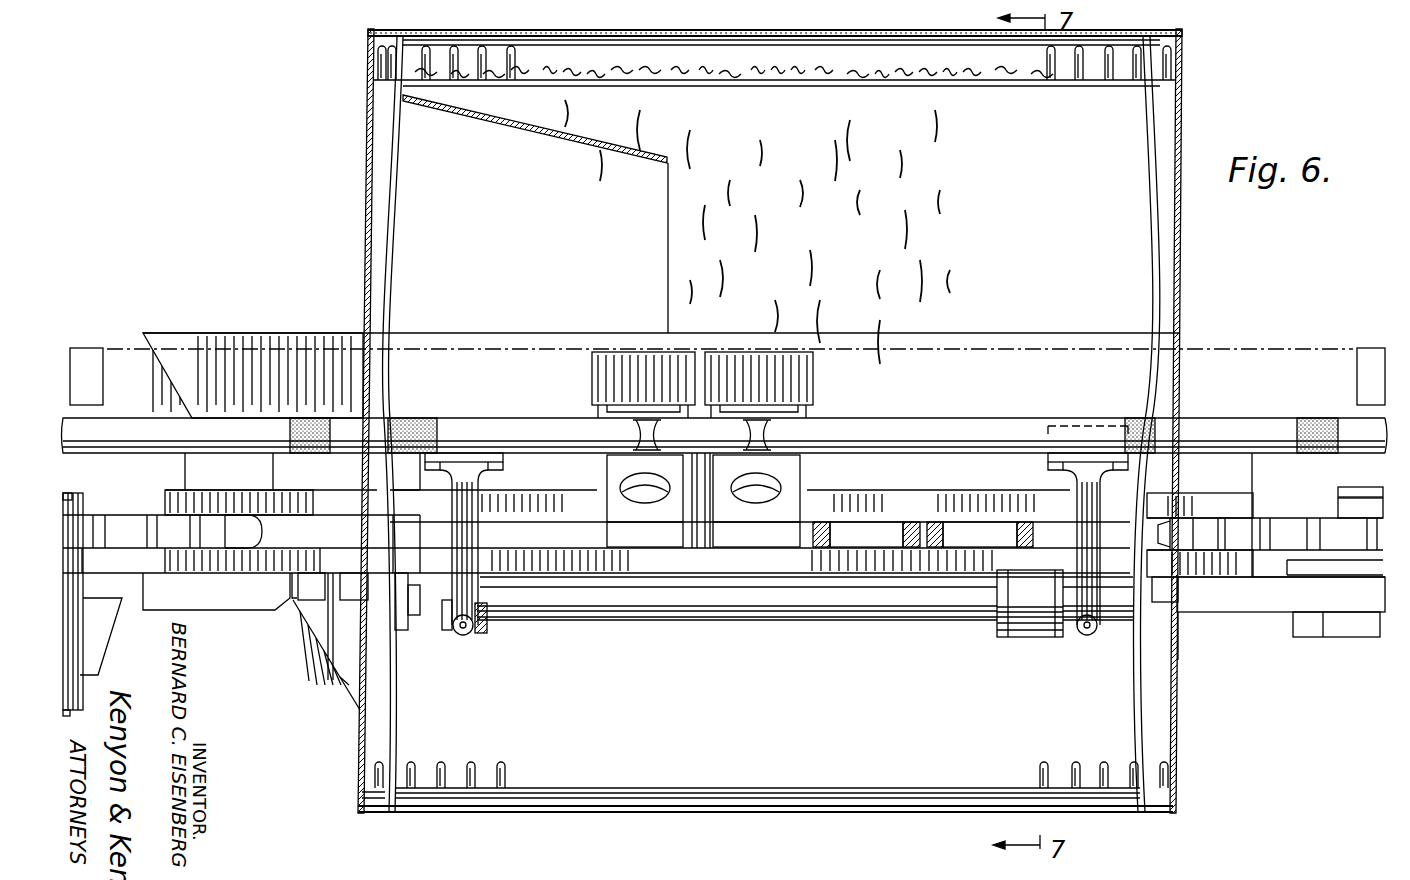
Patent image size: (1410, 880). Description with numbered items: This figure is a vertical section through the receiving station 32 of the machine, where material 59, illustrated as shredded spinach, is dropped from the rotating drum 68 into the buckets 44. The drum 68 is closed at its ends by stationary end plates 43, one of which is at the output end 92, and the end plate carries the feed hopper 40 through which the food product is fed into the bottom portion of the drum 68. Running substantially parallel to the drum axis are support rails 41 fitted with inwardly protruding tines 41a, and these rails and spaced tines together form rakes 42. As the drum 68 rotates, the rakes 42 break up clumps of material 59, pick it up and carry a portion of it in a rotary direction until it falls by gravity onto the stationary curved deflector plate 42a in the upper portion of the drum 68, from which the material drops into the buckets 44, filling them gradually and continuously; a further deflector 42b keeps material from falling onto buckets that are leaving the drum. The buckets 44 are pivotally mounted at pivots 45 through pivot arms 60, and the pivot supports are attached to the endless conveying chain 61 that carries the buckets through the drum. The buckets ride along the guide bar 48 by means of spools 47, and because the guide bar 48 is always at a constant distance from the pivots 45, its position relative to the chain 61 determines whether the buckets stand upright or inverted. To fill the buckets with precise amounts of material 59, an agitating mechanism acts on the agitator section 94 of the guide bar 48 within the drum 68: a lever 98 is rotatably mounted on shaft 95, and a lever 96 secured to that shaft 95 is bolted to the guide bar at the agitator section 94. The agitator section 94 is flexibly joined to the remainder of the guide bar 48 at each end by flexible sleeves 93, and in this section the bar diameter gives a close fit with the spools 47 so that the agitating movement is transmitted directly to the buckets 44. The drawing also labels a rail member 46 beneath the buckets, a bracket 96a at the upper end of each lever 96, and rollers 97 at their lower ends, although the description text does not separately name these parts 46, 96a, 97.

The receiving station 32 is at (772, 212).
The feed hopper 40 is at (168, 340).
The support rails 41 is at (395, 82).
The tines 41a is at (505, 773).
The rakes 42 is at (398, 70).
The deflector plate 42a is at (968, 86).
The deflector 42b is at (562, 132).
The stationary end plate 43 is at (368, 136).
The buckets 44 is at (800, 373).
The pivots 45 is at (598, 531).
The guide rail 46 is at (650, 540).
The spools 47 is at (768, 430).
The guide bar 48 is at (885, 430).
The material 59 is at (772, 138).
The pivot arms 60 is at (788, 472).
The endless conveying chain 61 is at (214, 536).
The rotating drum 68 is at (574, 31).
The output end 92 is at (1183, 136).
The flexible sleeves 93 is at (413, 421).
The agitator section 94 is at (945, 440).
The shaft 95 is at (885, 606).
The lever 96 is at (485, 600).
The bracket 96a is at (1052, 471).
The roller 97 is at (458, 632).
The lever 98 is at (1030, 616).